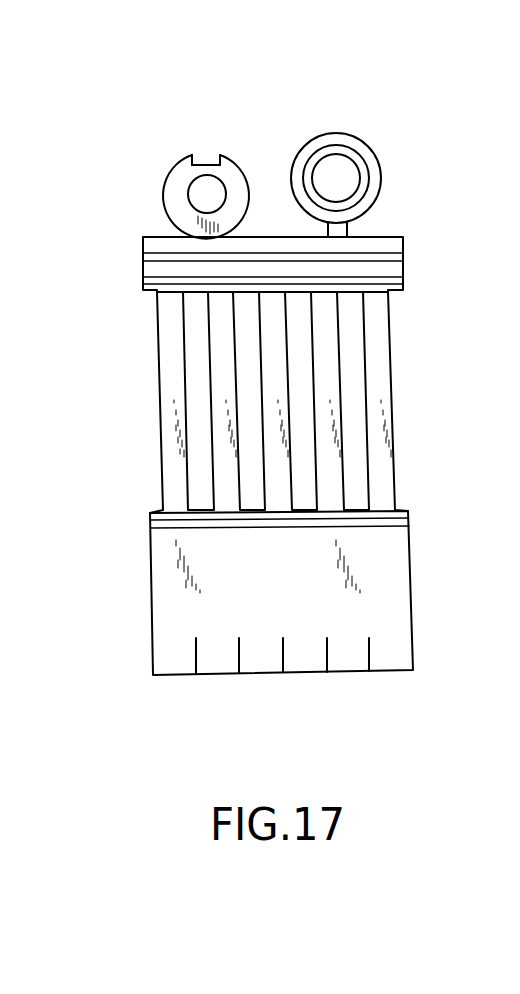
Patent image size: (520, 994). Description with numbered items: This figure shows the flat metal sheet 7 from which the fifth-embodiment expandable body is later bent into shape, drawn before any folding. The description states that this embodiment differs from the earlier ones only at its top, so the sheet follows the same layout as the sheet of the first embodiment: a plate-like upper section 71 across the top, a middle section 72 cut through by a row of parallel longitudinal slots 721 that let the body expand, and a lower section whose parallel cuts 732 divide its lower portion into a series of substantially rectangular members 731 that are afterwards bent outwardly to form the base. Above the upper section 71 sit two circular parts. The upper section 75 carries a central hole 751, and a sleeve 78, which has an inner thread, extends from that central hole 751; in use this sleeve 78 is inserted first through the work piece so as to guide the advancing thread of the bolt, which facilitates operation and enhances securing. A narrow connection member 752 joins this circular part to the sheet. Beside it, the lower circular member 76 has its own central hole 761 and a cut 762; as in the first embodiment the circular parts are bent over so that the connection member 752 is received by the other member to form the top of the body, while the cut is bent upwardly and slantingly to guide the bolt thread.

The heat sink 7 is at (269, 390).
The top plate 71 is at (135, 270).
The fins 72 is at (271, 402).
The slots between fins 721 is at (192, 433).
The base plate 731 is at (398, 657).
The grooves in base 732 is at (370, 655).
The upper section 75 is at (339, 121).
The central hole 751 is at (340, 172).
The stem connecting ring 752 is at (357, 223).
The sleeve 78 is at (328, 147).
The notched disk 76 is at (153, 150).
The central hole of disk 761 is at (203, 193).
The notch of disk 762 is at (207, 158).